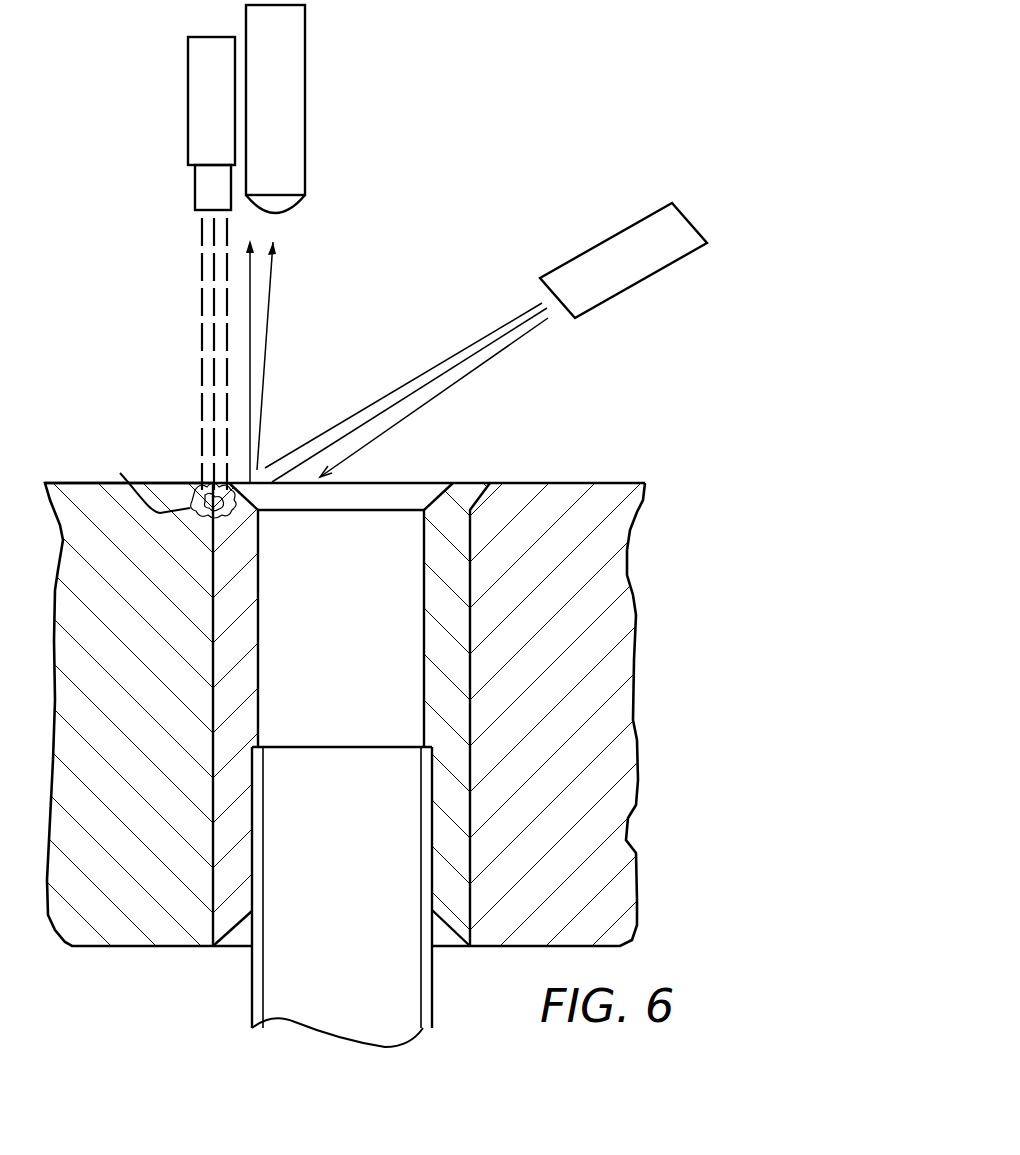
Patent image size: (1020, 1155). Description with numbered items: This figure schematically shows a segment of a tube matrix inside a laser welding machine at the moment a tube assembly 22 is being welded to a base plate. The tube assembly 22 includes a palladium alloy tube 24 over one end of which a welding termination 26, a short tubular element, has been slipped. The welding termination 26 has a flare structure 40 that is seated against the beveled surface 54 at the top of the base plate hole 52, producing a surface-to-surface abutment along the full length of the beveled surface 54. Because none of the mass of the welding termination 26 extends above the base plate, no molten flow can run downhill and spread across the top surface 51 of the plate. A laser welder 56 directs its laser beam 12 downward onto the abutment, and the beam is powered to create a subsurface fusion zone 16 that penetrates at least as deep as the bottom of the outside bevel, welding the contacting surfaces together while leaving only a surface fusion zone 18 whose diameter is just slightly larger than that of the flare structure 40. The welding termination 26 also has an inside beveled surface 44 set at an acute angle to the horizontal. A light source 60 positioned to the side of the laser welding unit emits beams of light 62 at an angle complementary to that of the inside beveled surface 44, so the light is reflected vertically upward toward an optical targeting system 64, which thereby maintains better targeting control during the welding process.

The laser beam 12 is at (204, 354).
The subsurface fusion zone 16 is at (140, 477).
The surface fusion zone 18 is at (192, 488).
The tube assembly 22 is at (250, 985).
The tube 24 is at (428, 1002).
The welding termination 26 is at (470, 718).
The flare structure 40 is at (490, 483).
The inside beveled surface 44 is at (253, 500).
The top surface 51 is at (81, 485).
The base plate hole 52 is at (240, 935).
The beveled surface 54 is at (478, 503).
The laser welder 56 is at (187, 150).
The light source 60 is at (588, 250).
The beams of light 62 is at (410, 385).
The optical targeting system 64 is at (305, 92).